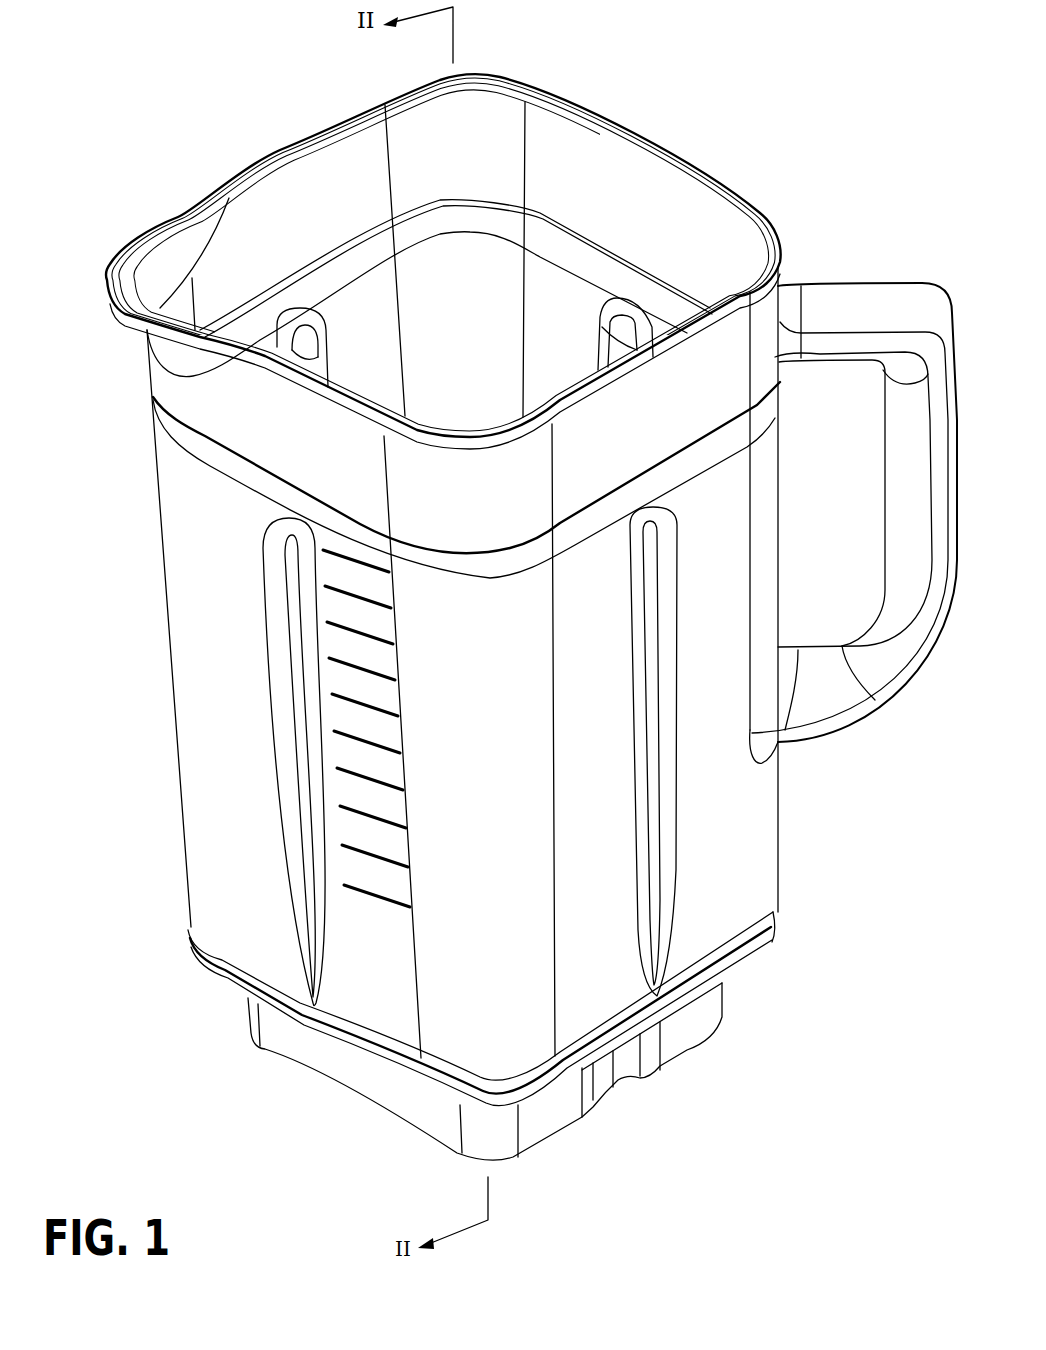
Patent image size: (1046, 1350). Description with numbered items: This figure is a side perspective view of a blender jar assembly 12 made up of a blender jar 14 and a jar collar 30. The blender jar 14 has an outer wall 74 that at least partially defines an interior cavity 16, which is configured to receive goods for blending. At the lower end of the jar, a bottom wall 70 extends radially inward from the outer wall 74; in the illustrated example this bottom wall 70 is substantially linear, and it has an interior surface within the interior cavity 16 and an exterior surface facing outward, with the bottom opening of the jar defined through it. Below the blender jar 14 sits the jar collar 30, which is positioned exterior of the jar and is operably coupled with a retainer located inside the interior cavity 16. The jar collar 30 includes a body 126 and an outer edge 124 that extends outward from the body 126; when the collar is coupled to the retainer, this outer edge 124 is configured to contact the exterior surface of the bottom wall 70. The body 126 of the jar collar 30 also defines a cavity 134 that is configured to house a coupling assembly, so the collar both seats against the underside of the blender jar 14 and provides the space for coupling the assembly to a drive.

The blender jar assembly 12 is at (678, 86).
The blender jar 14 is at (777, 236).
The interior cavity 16 is at (330, 184).
The outer wall 74 is at (232, 817).
The bottom wall 70 is at (730, 938).
The outer edge 124 is at (750, 958).
The body 126 is at (317, 1052).
The jar collar 30 is at (700, 1012).
The cavity 134 is at (670, 1047).